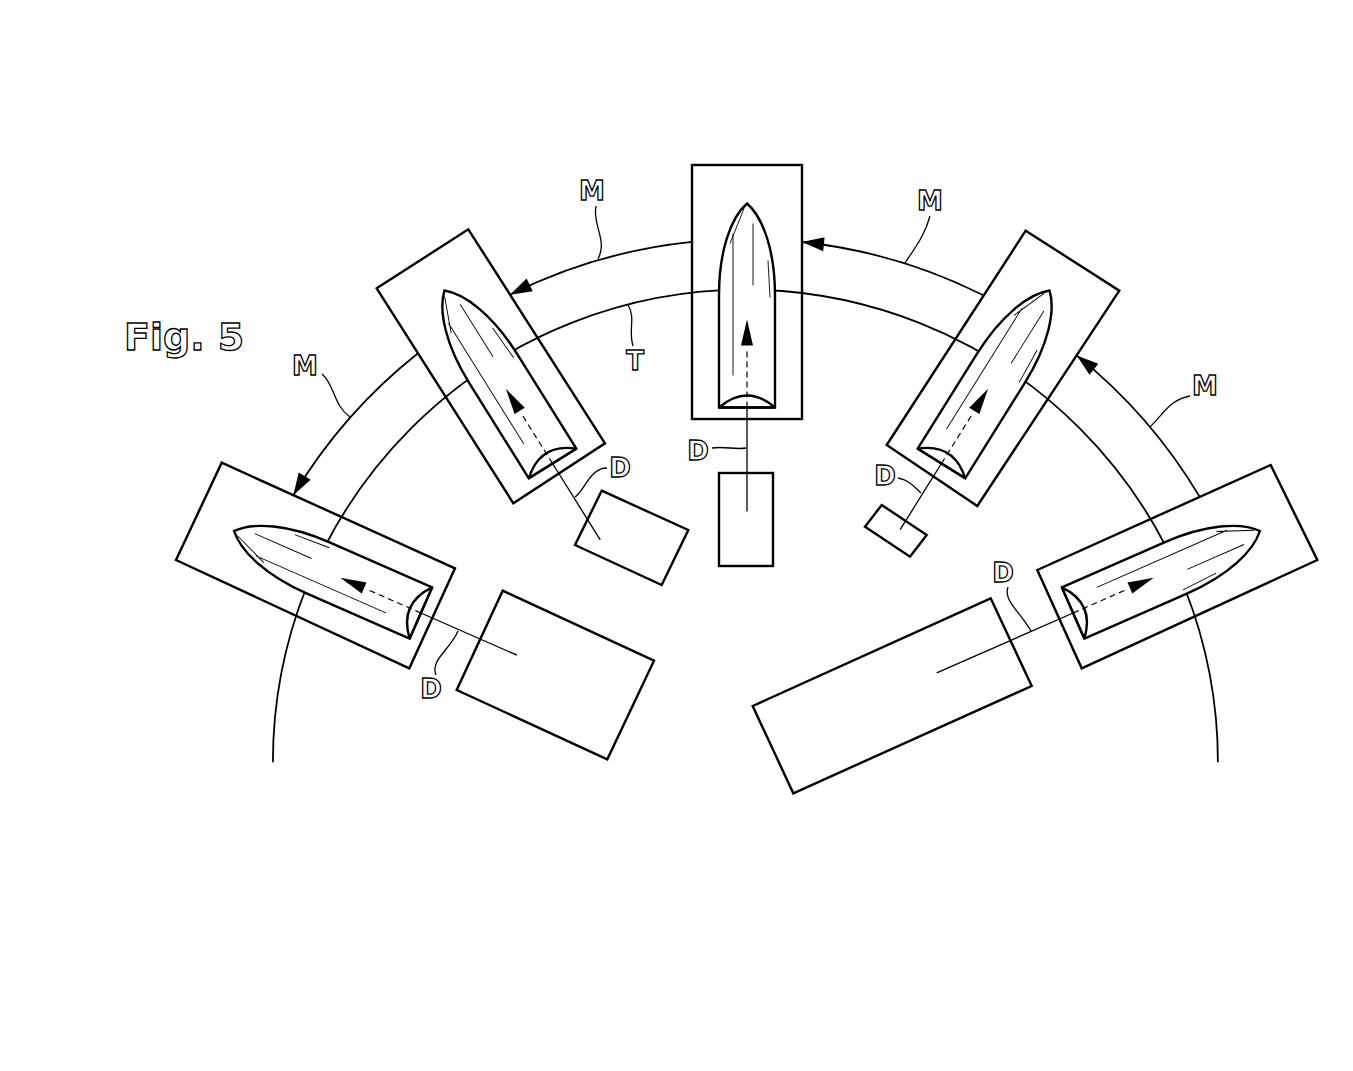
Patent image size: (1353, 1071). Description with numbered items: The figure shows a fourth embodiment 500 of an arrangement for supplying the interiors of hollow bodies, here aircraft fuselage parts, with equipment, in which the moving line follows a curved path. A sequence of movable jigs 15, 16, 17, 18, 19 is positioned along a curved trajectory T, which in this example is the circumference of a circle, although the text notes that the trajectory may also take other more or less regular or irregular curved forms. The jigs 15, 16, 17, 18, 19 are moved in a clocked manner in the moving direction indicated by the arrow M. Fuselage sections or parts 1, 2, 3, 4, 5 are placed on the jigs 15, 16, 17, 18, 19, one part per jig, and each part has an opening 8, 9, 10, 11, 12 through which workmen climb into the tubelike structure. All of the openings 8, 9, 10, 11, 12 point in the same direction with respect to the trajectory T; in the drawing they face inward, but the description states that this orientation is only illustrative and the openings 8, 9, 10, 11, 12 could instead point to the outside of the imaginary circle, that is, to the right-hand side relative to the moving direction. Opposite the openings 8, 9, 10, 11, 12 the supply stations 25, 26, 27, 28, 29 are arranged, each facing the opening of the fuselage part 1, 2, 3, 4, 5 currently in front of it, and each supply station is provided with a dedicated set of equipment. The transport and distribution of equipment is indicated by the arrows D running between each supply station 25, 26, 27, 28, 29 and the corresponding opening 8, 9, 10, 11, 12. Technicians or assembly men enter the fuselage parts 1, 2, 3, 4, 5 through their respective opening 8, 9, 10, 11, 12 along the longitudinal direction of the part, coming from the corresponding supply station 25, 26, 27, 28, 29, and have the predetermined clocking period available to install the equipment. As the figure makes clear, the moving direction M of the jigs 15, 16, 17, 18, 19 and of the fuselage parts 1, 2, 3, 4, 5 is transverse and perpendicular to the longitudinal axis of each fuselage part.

The embodiment 500 is at (505, 166).
The fuselage section 1 is at (273, 566).
The fuselage section 2 is at (463, 349).
The fuselage section 3 is at (738, 270).
The fuselage section 4 is at (1013, 349).
The fuselage section 5 is at (1203, 566).
The opening 8 is at (426, 611).
The opening 9 is at (553, 467).
The opening 10 is at (750, 411).
The opening 11 is at (942, 467).
The opening 12 is at (1072, 620).
The movable jig 15 is at (220, 518).
The movable jig 16 is at (437, 272).
The movable jig 17 is at (753, 187).
The movable jig 18 is at (1065, 283).
The movable jig 19 is at (1278, 523).
The supply station 25 is at (556, 700).
The supply station 26 is at (641, 541).
The supply station 27 is at (748, 541).
The supply station 28 is at (902, 541).
The supply station 29 is at (804, 730).